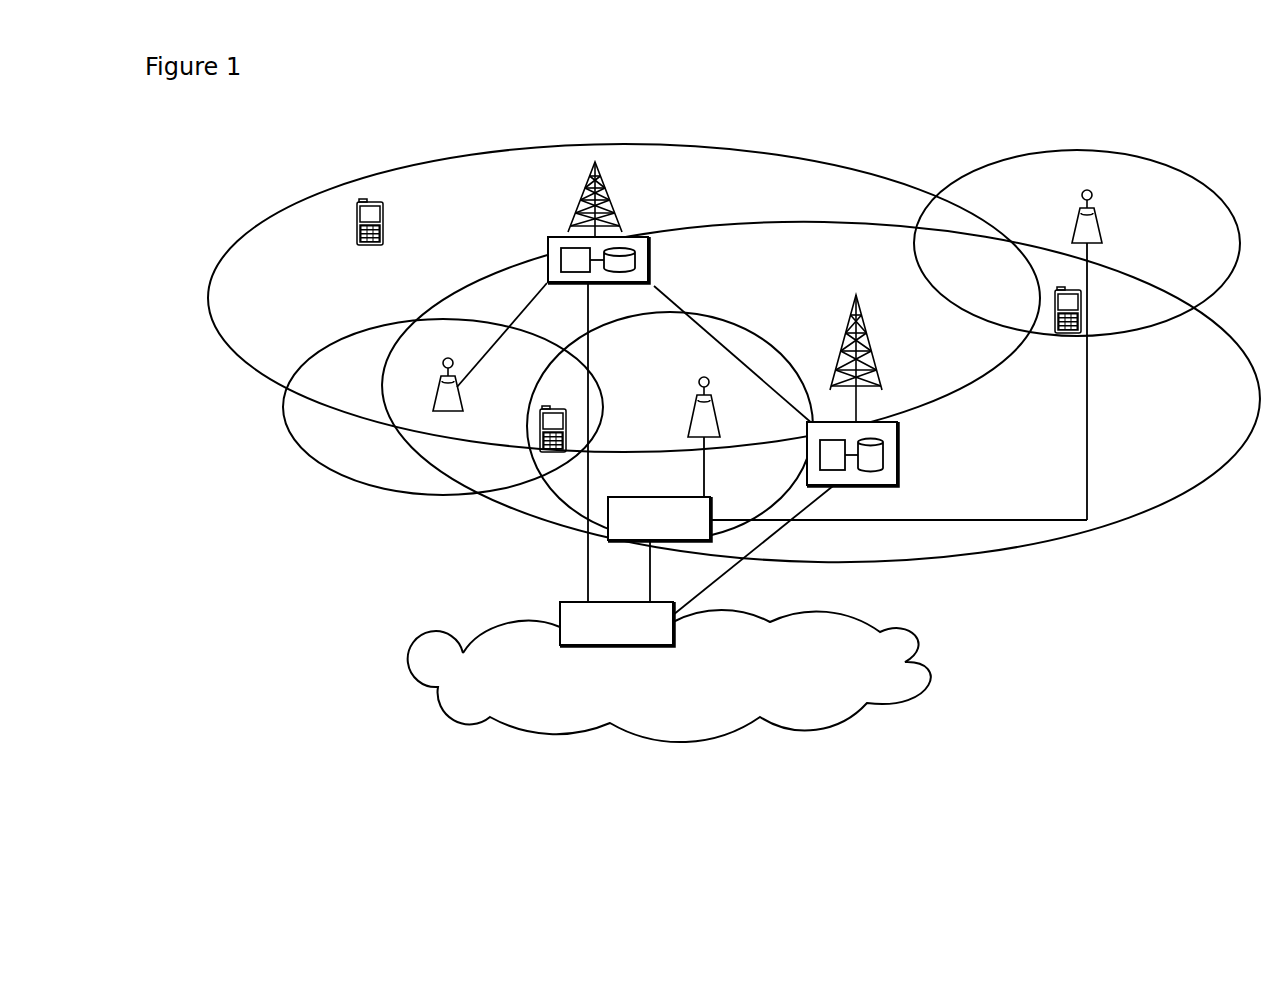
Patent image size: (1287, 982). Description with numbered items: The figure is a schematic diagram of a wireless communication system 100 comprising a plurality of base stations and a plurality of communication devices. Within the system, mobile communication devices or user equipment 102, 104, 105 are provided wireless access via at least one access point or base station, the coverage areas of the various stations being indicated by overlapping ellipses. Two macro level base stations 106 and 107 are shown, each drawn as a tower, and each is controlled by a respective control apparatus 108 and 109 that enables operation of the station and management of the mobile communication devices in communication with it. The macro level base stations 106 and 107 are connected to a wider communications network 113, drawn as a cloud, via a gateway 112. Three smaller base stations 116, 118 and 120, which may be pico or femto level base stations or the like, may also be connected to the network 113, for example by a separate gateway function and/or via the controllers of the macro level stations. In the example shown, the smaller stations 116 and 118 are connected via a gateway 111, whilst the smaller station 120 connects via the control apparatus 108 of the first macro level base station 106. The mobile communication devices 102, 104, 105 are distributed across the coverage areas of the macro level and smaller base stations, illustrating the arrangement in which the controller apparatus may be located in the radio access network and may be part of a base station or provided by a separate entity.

The wireless communication system 100 is at (285, 185).
The mobile communication device 102 is at (357, 237).
The mobile communication device 104 is at (540, 430).
The mobile communication device 105 is at (1067, 334).
The macro level base station 106 is at (580, 205).
The macro level base station 107 is at (875, 360).
The control apparatus 108 is at (547, 250).
The control apparatus 109 is at (888, 478).
The gateway 111 is at (615, 527).
The gateway 112 is at (562, 602).
The wider communications network 113 is at (492, 653).
The smaller base station 116 is at (1077, 218).
The smaller base station 118 is at (705, 422).
The smaller base station 120 is at (437, 391).